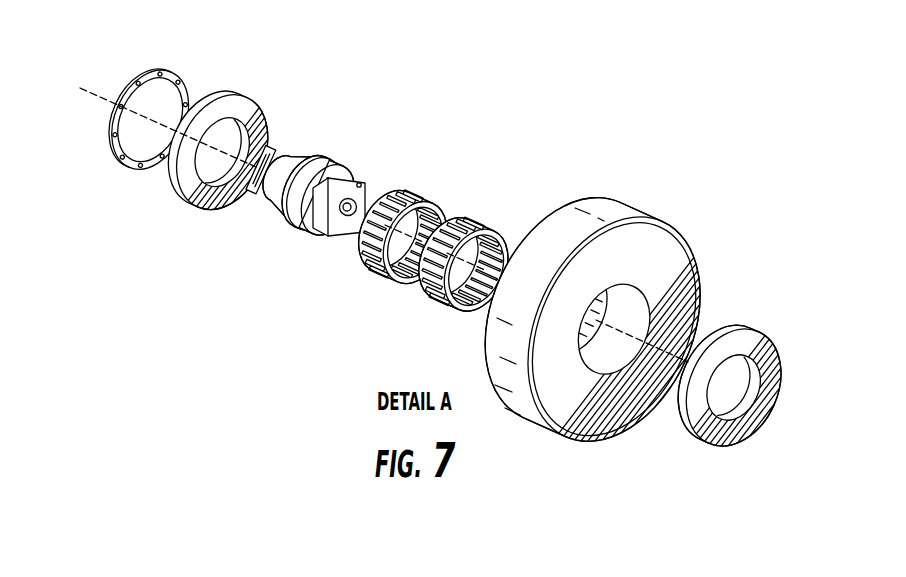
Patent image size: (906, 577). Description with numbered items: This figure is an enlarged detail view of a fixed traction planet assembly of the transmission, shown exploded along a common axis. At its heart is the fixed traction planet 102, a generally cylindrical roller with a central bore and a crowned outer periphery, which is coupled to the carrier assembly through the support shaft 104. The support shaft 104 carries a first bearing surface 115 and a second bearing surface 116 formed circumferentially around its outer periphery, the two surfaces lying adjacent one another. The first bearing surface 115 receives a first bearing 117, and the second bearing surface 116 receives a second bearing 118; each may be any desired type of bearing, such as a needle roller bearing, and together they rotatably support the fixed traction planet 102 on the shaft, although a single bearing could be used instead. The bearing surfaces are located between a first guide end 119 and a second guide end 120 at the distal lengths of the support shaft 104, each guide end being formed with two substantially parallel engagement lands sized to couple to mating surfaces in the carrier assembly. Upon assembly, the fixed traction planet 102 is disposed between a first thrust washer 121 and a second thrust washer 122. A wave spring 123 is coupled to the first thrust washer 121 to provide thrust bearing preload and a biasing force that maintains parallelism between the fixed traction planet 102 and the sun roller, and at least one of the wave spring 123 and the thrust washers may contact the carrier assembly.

The fixed traction planet 102 is at (613, 210).
The support shaft 104 is at (345, 238).
The first bearing surface 115 is at (267, 217).
The second bearing surface 116 is at (300, 230).
The first bearing 117 is at (420, 192).
The second bearing 118 is at (482, 218).
The first guide end 119 is at (277, 147).
The second guide end 120 is at (360, 183).
The first thrust washer 121 is at (227, 95).
The second thrust washer 122 is at (748, 330).
The wave spring 123 is at (132, 165).